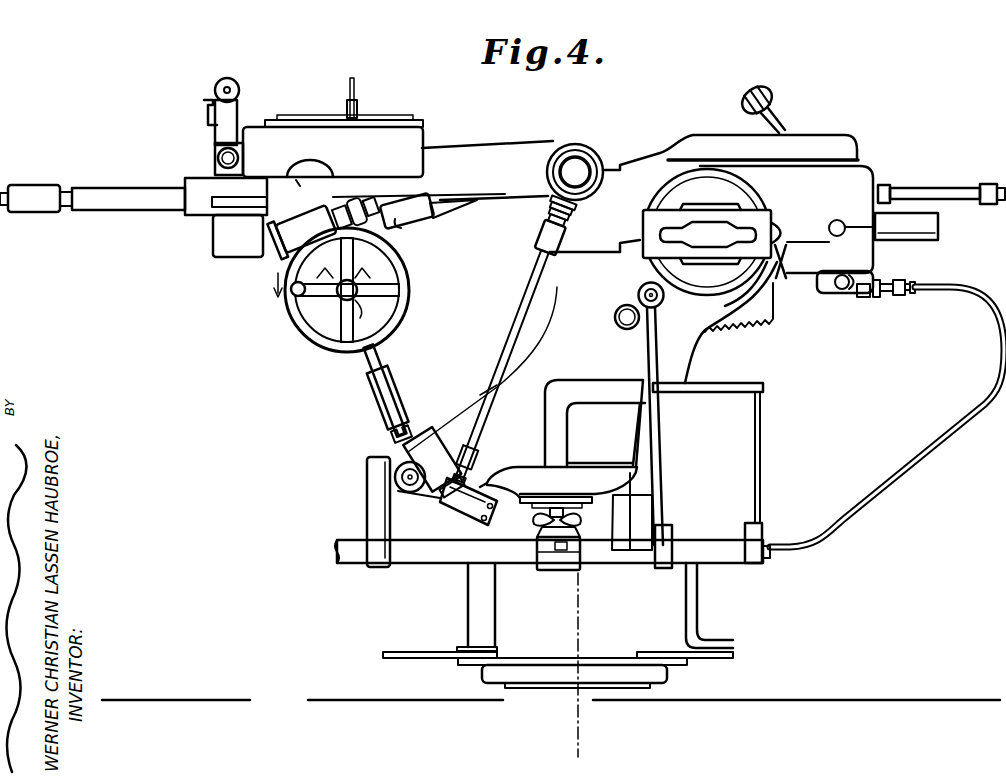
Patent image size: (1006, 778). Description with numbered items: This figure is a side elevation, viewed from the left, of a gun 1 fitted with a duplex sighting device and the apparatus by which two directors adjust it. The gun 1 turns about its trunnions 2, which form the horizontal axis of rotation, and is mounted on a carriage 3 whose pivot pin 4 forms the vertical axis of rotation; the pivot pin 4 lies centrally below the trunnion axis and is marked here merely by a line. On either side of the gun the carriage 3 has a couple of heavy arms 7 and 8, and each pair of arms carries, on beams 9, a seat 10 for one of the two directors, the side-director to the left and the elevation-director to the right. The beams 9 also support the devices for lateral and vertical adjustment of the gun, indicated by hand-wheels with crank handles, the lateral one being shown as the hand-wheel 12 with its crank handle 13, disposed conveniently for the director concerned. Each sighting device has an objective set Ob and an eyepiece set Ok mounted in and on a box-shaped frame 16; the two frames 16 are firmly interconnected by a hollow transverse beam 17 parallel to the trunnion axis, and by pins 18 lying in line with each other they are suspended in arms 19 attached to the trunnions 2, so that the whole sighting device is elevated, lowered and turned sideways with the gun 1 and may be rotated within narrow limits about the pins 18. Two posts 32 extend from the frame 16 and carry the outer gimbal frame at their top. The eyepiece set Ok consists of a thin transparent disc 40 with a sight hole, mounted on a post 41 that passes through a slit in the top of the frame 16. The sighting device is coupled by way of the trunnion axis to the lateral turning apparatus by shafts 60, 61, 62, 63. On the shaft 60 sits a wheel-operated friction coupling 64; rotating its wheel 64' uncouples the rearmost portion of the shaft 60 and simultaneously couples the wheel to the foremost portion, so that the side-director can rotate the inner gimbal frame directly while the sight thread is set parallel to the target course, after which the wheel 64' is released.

The gun 1 is at (112, 197).
The trunnions 2 is at (567, 175).
The carriage 3 is at (557, 287).
The pivot pin 4 is at (588, 605).
The heavy arm 7 is at (665, 562).
The heavy arm 8 is at (752, 562).
The beams 9 is at (446, 562).
The seat 10 is at (528, 461).
The hand-wheel 12 is at (305, 325).
The crank handle 13 is at (296, 297).
The frame 16 is at (249, 150).
The hollow transverse beam 17 is at (230, 250).
The pins 18 is at (296, 181).
The arms 19 is at (449, 158).
The posts 32 is at (225, 133).
The thin transparent disc 40 is at (356, 94).
The post 41 is at (347, 108).
The shaft 60 is at (435, 208).
The shaft 61 is at (497, 386).
The shaft 62 is at (410, 486).
The shaft 63 is at (405, 417).
The wheel-operated friction coupling 64 is at (324, 225).
The friction-coupling wheel 64' is at (325, 170).